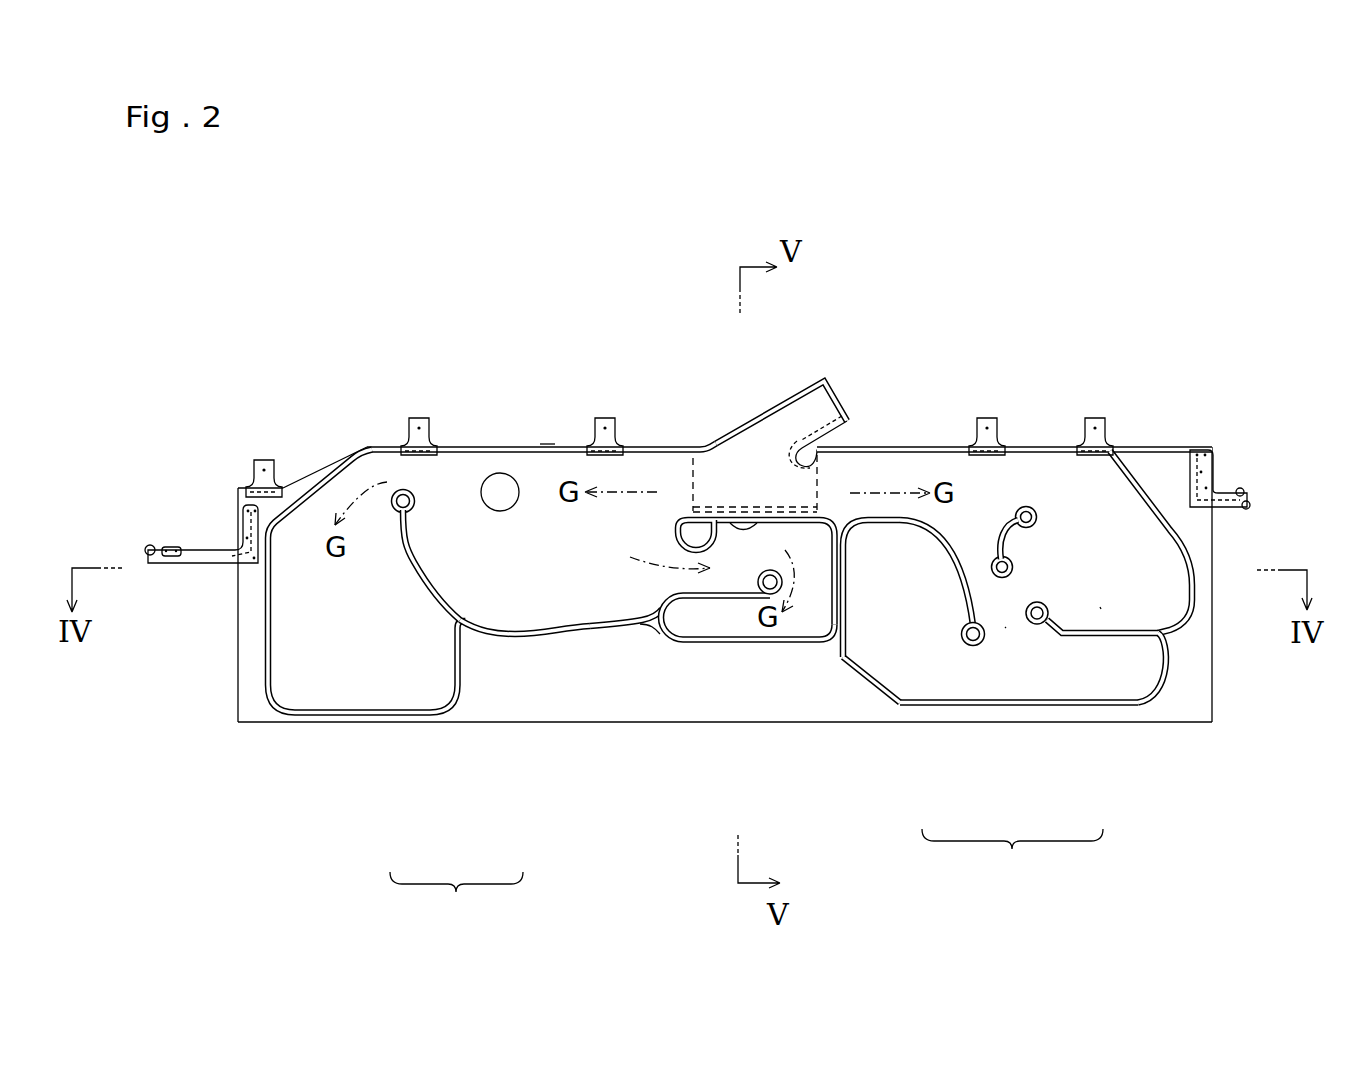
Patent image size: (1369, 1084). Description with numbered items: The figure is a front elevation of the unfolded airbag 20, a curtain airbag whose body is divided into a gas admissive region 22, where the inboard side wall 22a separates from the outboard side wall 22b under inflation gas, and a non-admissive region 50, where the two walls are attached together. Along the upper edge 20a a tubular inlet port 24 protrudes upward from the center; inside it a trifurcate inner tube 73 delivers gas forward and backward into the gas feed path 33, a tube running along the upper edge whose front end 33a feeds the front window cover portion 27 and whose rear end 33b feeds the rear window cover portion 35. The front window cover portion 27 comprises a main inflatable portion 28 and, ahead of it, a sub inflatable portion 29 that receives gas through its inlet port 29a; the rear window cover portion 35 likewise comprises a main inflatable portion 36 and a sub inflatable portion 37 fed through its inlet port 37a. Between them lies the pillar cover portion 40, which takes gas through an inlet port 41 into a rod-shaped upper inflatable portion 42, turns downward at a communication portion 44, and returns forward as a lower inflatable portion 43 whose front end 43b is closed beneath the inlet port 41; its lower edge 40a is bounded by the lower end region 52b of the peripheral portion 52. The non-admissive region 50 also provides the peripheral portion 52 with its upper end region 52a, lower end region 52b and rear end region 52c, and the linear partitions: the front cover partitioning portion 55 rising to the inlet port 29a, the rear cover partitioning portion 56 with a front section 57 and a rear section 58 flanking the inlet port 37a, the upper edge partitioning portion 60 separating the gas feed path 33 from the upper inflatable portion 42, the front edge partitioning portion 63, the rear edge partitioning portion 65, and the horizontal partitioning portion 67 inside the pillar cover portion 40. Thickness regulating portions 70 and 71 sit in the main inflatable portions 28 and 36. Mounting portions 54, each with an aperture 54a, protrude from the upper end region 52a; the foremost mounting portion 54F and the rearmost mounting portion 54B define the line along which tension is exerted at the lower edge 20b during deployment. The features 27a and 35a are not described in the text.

The airbag 20 is at (259, 287).
The upper edge 20a is at (917, 470).
The lower edge 20b is at (555, 714).
The gas admissive region 22 is at (283, 706).
The inboard side wall 22a is at (328, 690).
The outboard side wall 22b is at (363, 695).
The inlet port 24 is at (815, 408).
The front window cover portion 27 is at (456, 901).
The communication passage 27a is at (537, 630).
The main inflatable portion 28 is at (512, 608).
The sub inflatable portion 29 is at (392, 688).
The inlet port 29a is at (398, 472).
The gas feed path 33 is at (853, 470).
The front end 33a is at (687, 481).
The rear end 33b is at (945, 470).
The rear window cover portion 35 is at (973, 704).
The second chamber lobe 35a is at (1123, 620).
The main inflatable portion 36 is at (1100, 607).
The sub inflatable portion 37 is at (930, 663).
The inlet port 37a is at (1005, 627).
The pillar cover portion 40 is at (764, 671).
The lower edge 40a is at (739, 641).
The inlet port 41 is at (687, 552).
The upper inflatable portion 42 is at (698, 613).
The lower inflatable portion 43 is at (712, 627).
The front end 43b is at (672, 612).
The communication portion 44 is at (813, 630).
The non-admissive region 50 is at (553, 440).
The peripheral portion 52 is at (565, 443).
The upper end region 52a is at (565, 446).
The lower end region 52b is at (788, 644).
The rear end region 52c is at (1196, 590).
The mounting portions 54 is at (283, 466).
The aperture 54a is at (263, 461).
The mounting portion 54F is at (205, 550).
The rearmost mounting portion 54B is at (1253, 490).
The front cover partitioning portion 55 is at (423, 580).
The rear cover partitioning portion 56 is at (1067, 642).
The front section 57 is at (952, 557).
The rear section 58 is at (1067, 642).
The upper edge partitioning portion 60 is at (730, 521).
The front edge partitioning portion 63 is at (657, 600).
The rear edge partitioning portion 65 is at (845, 597).
The horizontal partitioning portion 67 is at (697, 584).
The thickness regulating portion 70 is at (497, 473).
The thickness regulating portion 71 is at (1023, 508).
The inner tube 73 is at (773, 433).